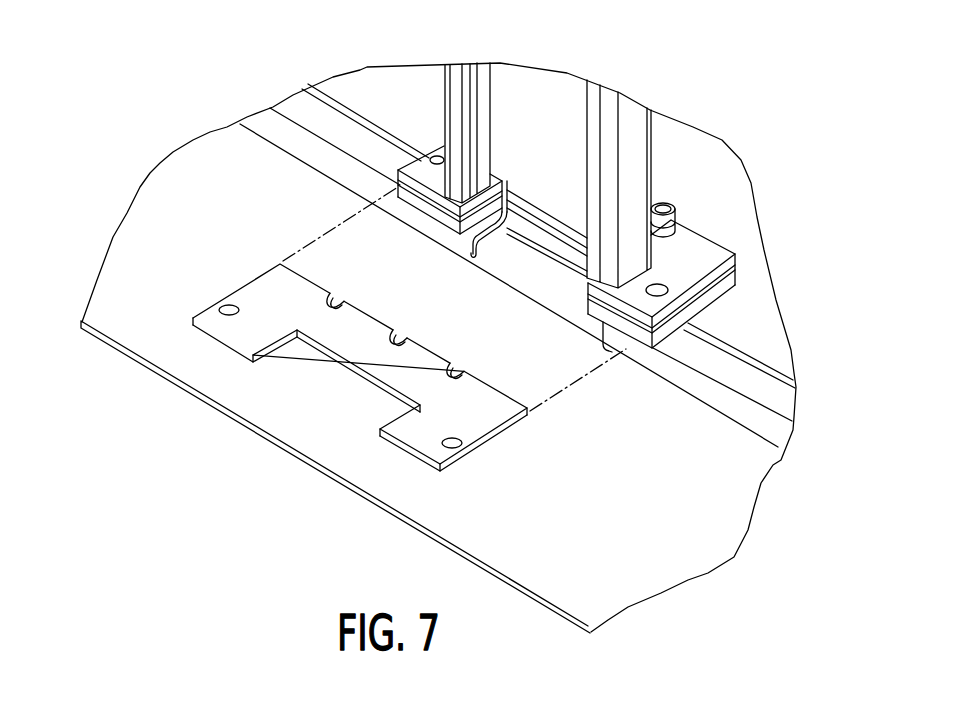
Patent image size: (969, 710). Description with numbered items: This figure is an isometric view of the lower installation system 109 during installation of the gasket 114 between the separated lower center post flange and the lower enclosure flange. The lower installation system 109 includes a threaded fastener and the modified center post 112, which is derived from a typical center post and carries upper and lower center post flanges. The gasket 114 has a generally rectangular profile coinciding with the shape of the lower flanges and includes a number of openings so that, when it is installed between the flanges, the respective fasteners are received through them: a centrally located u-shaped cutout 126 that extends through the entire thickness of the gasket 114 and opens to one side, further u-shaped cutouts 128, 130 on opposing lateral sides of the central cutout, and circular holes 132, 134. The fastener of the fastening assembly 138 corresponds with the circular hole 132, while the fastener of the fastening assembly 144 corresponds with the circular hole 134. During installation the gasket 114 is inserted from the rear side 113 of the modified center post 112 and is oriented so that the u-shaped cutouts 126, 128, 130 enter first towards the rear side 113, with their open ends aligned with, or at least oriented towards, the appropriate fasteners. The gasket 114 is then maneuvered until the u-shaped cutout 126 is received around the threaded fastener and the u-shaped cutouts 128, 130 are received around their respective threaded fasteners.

The lower installation system 109 is at (140, 47).
The modified center post 112 is at (452, 117).
The rear side 113 is at (556, 127).
The gasket 114 is at (367, 356).
The u-shaped cutout 126 is at (427, 324).
The u-shaped cutout 128 is at (365, 297).
The u-shaped cutout 130 is at (485, 360).
The circular hole 132 is at (222, 309).
The circular hole 134 is at (458, 448).
The fastening assembly 138 is at (680, 265).
The fastening assembly 144 is at (423, 163).